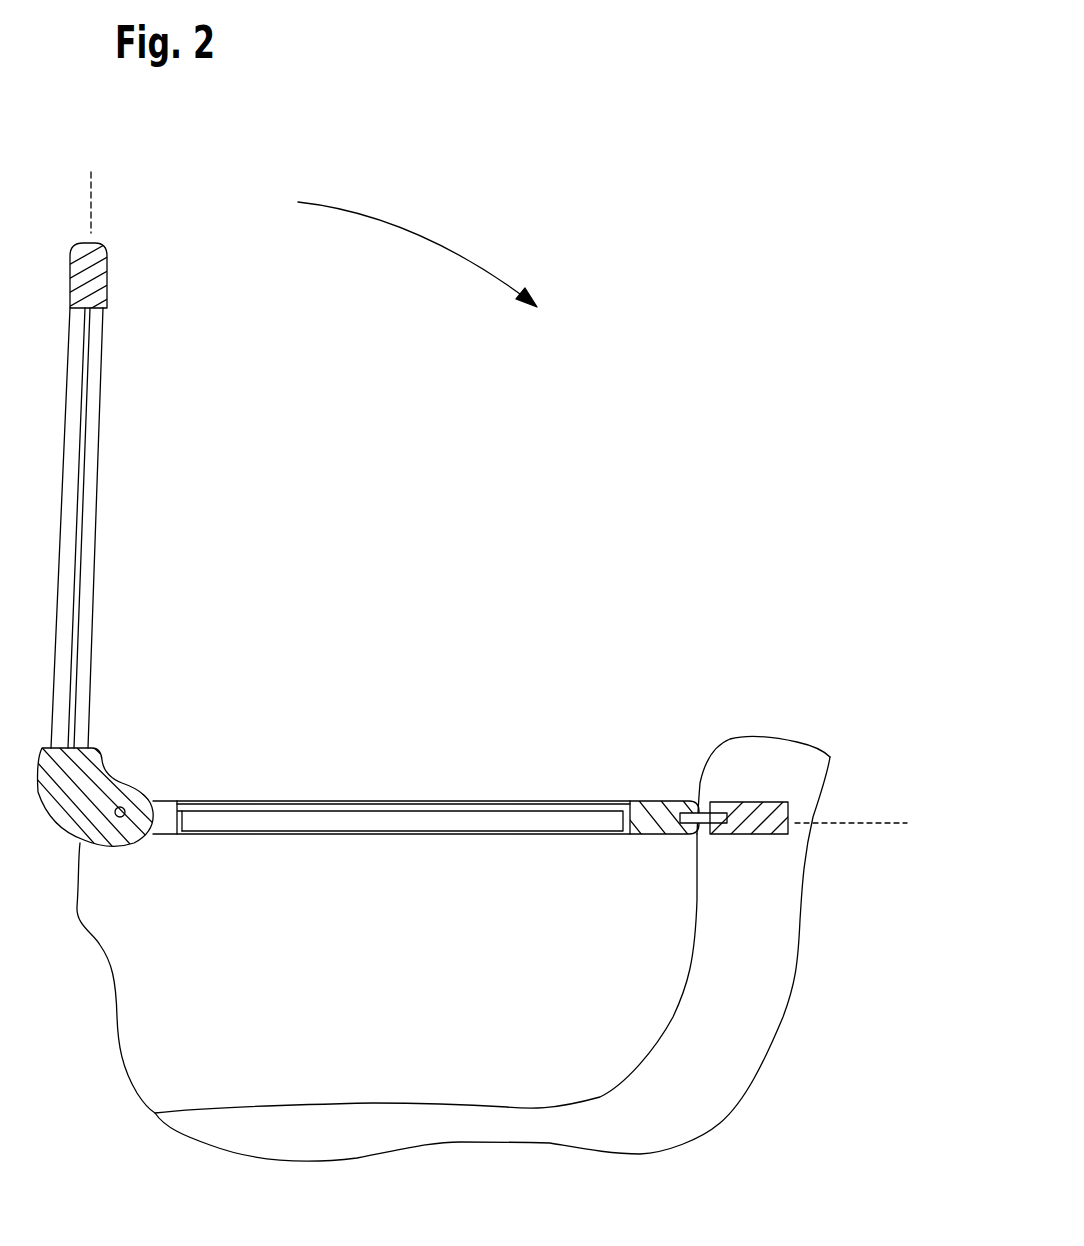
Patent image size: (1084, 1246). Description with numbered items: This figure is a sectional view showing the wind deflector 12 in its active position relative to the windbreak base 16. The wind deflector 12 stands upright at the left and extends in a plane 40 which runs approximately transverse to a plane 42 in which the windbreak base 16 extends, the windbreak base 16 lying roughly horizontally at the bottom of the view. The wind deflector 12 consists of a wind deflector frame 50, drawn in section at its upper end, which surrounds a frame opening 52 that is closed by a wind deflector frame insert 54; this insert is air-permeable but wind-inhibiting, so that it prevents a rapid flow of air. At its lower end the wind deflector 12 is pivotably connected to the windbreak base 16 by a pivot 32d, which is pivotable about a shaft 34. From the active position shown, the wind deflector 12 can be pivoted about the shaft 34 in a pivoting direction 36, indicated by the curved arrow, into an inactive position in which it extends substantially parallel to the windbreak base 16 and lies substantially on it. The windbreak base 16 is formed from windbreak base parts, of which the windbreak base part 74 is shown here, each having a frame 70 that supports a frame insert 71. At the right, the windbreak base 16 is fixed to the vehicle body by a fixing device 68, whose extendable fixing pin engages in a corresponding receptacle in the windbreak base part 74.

The wind deflector 12 is at (107, 247).
The windbreak base 16 is at (490, 801).
The pivot 32d is at (92, 770).
The shaft 34 is at (123, 809).
The pivoting direction 36 is at (417, 233).
The plane 40 is at (91, 172).
The plane 42 is at (875, 827).
The wind deflector frame 50 is at (96, 297).
The frame opening 52 is at (93, 357).
The wind deflector frame insert 54 is at (83, 413).
The fixing device 68 is at (767, 810).
The frame 70 is at (678, 810).
The frame insert 71 is at (573, 800).
The windbreak base part 74 is at (632, 801).